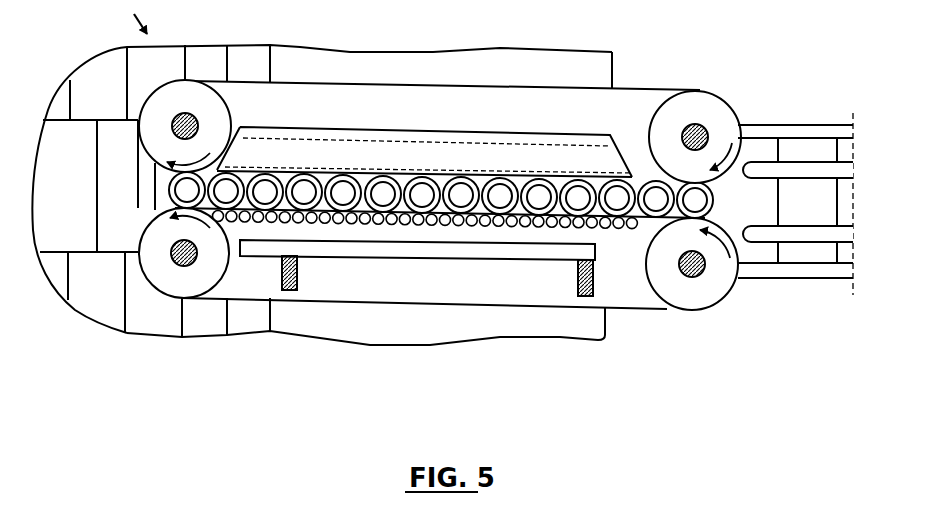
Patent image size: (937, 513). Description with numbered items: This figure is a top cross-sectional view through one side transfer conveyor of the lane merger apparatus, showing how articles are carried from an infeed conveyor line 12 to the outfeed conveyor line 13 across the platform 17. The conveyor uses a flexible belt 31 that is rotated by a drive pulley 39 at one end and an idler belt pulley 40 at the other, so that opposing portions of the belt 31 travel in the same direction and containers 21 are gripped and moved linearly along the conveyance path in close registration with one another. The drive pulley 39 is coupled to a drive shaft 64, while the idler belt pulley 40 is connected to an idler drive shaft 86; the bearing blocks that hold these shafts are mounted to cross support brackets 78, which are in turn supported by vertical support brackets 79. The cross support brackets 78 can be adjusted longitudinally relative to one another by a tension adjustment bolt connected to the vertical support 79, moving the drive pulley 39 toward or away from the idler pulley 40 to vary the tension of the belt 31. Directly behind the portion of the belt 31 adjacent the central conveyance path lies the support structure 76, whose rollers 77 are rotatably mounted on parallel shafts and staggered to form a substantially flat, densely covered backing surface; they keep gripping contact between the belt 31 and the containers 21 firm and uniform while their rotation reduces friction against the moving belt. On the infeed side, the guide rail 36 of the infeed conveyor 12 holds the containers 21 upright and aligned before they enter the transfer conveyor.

The infeed conveyor line 12 is at (821, 214).
The outfeed conveyor line 13 is at (112, 295).
The platform 17 is at (503, 327).
The containers 21 is at (706, 203).
The belt 31 is at (632, 87).
The guide rail 36 is at (817, 163).
The drive pulley 39 is at (203, 100).
The idler belt pulley 40 is at (710, 107).
The drive shaft 64 is at (178, 120).
The support structure 76 is at (381, 137).
The rollers 77 is at (298, 170).
The cross support bracket 78 is at (500, 150).
The vertical support bracket 79 is at (293, 279).
The idler drive shaft 86 is at (698, 278).